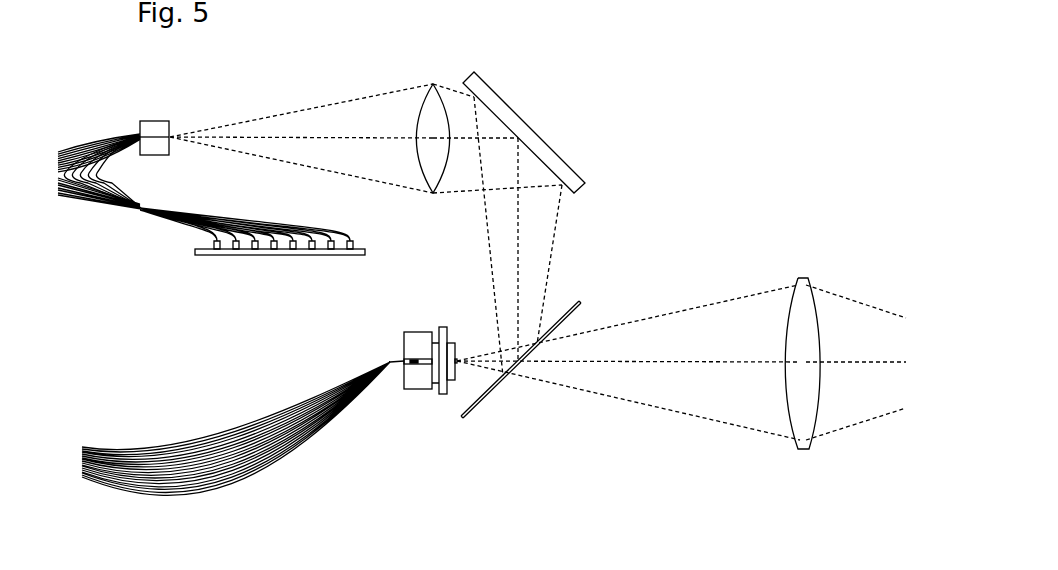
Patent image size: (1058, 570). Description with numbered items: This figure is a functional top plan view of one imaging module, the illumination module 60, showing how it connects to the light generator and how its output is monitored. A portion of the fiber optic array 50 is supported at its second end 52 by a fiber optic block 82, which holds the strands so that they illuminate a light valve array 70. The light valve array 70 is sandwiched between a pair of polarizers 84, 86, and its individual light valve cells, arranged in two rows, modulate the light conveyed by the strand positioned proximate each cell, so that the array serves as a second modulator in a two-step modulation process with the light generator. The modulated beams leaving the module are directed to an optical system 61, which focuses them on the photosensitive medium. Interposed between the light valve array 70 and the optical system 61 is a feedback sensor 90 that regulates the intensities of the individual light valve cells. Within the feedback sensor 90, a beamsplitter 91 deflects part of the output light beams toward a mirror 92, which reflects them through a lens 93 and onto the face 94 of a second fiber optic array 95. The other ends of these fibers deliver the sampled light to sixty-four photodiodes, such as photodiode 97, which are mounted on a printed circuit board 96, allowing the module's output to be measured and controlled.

The fiber optic array 50 is at (107, 456).
The second end 52 is at (395, 368).
The illumination module 60 is at (378, 473).
The optical system 61 is at (805, 279).
The light valve array 70 is at (443, 327).
The fiber optic block 82 is at (404, 360).
The polarizer 84 is at (412, 333).
The polarizer 86 is at (450, 343).
The feedback sensor 90 is at (538, 127).
The beamsplitter 91 is at (581, 303).
The mirror 92 is at (582, 186).
The lens 93 is at (432, 84).
The face 94 is at (169, 122).
The second fiber optic array 95 is at (142, 206).
The printed circuit board 96 is at (365, 250).
The photodiode 97 is at (351, 240).